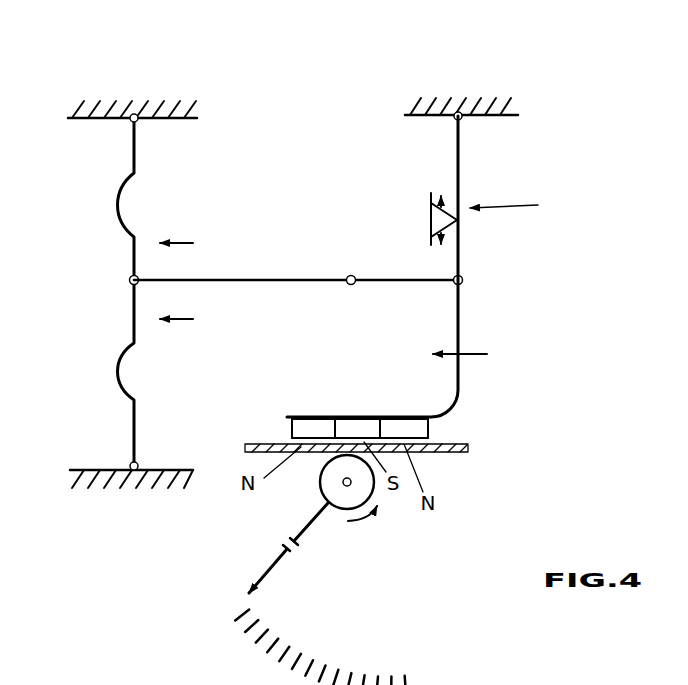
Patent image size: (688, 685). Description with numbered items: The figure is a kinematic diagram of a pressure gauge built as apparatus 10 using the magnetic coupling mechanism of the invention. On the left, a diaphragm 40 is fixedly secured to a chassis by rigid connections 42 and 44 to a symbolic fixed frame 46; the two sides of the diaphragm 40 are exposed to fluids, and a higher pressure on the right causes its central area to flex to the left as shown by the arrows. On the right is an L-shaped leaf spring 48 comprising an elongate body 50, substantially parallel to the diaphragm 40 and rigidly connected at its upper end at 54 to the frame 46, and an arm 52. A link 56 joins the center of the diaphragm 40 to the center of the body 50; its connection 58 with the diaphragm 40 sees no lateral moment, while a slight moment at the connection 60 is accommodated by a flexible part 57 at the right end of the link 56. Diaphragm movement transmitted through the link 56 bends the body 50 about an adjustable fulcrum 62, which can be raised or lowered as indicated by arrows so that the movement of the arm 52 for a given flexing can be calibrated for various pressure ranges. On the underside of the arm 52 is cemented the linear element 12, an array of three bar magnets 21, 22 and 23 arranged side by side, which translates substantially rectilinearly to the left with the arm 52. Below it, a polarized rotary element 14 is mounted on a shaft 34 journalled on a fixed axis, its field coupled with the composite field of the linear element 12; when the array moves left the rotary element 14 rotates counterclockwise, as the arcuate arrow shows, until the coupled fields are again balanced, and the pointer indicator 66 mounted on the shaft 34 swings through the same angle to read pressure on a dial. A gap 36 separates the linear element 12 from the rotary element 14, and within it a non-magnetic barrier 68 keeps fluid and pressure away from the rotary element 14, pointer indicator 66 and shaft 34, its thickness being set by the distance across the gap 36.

The apparatus 10 is at (267, 388).
The linear element 12 is at (284, 424).
The rotary element 14 is at (326, 503).
The magnet 21 is at (318, 419).
The magnet 22 is at (352, 419).
The magnet 23 is at (403, 419).
The shaft 34 is at (342, 484).
The gap 36 is at (440, 438).
The diaphragm 40 is at (129, 234).
The rigid connection 42 is at (131, 121).
The rigid connection 44 is at (131, 463).
The fixed frame 46 is at (117, 100).
The leaf spring 48 is at (519, 205).
The elongate body 50 is at (465, 182).
The arm 52 is at (380, 419).
The rigid connection 54 is at (452, 119).
The link 56 is at (340, 277).
The flexible part 57 is at (402, 277).
The connection 58 is at (131, 281).
The connection 60 is at (464, 278).
The adjustable fulcrum 62 is at (436, 220).
The pointer indicator 66 is at (272, 572).
The non-magnetic barrier 68 is at (444, 453).